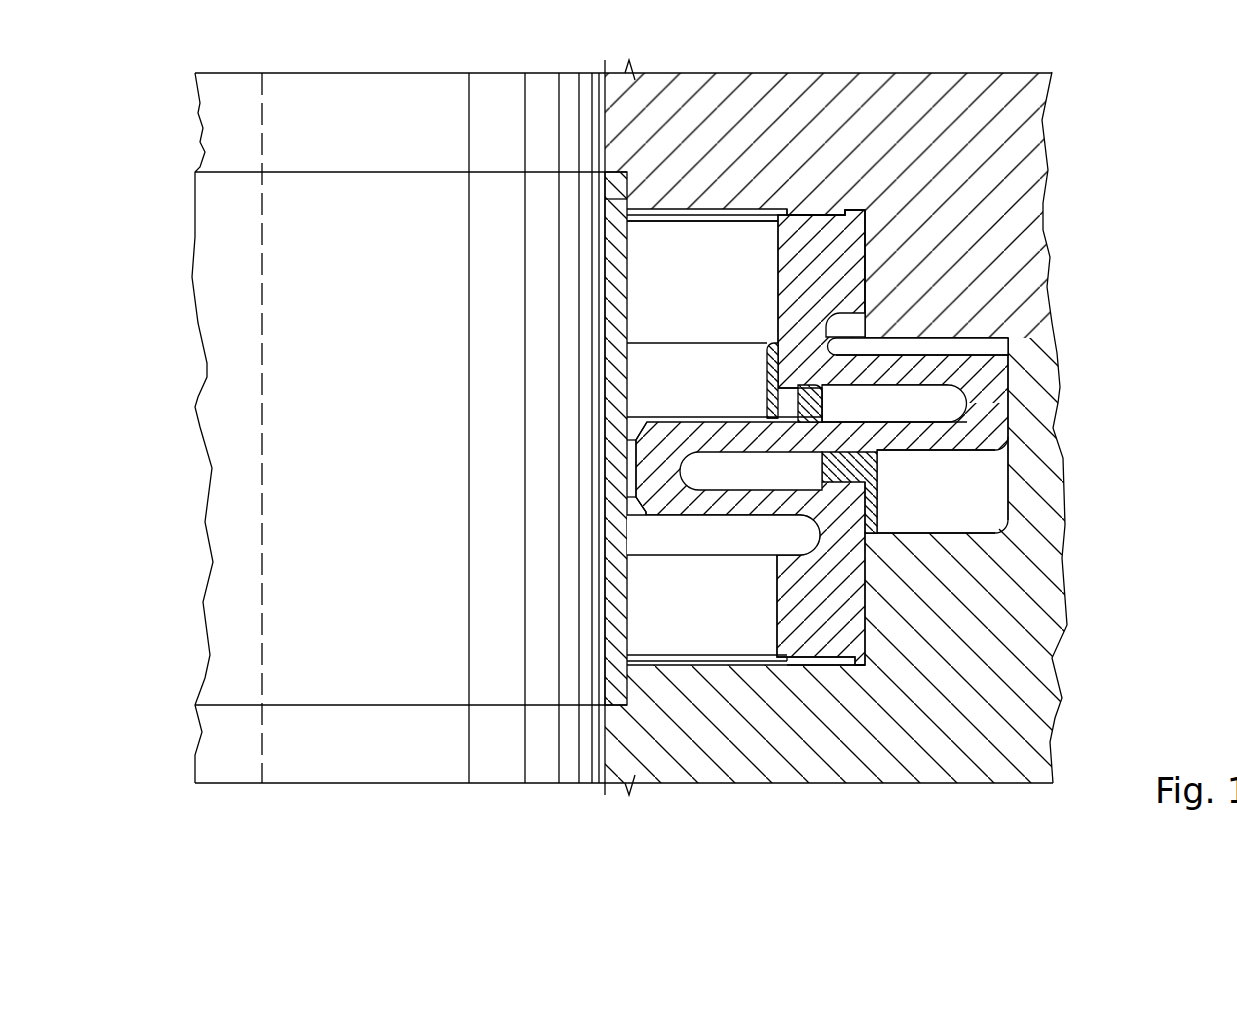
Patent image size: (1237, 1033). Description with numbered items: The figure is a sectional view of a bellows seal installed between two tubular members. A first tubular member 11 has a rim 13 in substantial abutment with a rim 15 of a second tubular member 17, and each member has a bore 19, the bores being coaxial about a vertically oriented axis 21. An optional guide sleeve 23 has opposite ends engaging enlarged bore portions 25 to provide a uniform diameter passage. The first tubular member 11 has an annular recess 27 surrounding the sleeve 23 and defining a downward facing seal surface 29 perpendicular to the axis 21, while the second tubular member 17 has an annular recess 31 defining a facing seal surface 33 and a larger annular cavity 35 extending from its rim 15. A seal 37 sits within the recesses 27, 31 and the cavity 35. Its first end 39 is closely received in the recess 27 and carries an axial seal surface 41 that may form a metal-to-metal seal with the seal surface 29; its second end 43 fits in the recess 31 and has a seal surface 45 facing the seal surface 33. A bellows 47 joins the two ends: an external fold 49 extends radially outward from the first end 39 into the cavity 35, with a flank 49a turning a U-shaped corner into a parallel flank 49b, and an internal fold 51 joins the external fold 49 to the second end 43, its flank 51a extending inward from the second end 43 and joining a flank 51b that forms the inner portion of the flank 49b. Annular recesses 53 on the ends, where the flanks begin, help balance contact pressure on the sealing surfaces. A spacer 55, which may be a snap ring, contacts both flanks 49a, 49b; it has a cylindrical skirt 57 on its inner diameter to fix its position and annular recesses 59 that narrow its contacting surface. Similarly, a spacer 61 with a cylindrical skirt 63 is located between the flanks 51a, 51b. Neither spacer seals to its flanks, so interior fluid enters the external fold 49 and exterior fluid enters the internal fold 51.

The first tubular member 11 is at (1010, 85).
The rim 13 is at (1018, 350).
The rim 15 is at (1013, 337).
The second tubular member 17 is at (1048, 705).
The bore 19 is at (605, 97).
The axis 21 is at (262, 272).
The guide sleeve 23 is at (617, 281).
The enlarged bore portions 25 is at (626, 194).
The annular recess 27 is at (852, 268).
The seal surface 29 is at (838, 228).
The annular recess 31 is at (860, 597).
The seal surface 33 is at (820, 653).
The annular cavity 35 is at (1000, 511).
The seal 37 is at (628, 507).
The first end 39 is at (778, 255).
The axial seal surface 41 is at (830, 232).
The second end 43 is at (845, 570).
The seal surface 45 is at (830, 665).
The bellows 47 is at (630, 409).
The external fold 49 is at (985, 402).
The flank 49a is at (937, 350).
The flank 49b is at (920, 452).
The internal fold 51 is at (658, 467).
The flank 51a is at (757, 517).
The flank 51b is at (716, 422).
The annular recesses 53 is at (830, 330).
The spacer 55 is at (822, 407).
The cylindrical skirt 57 is at (767, 352).
The annular recesses 59 is at (772, 422).
The spacer 61 is at (833, 473).
The cylindrical skirt 63 is at (878, 516).